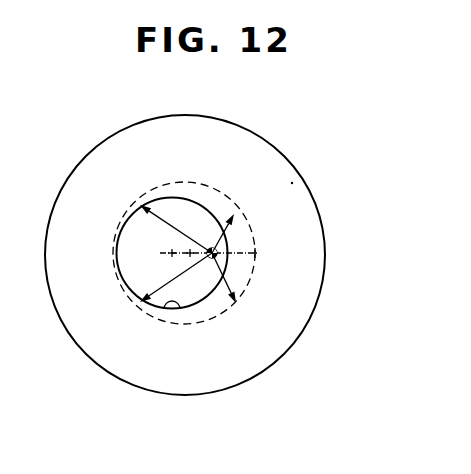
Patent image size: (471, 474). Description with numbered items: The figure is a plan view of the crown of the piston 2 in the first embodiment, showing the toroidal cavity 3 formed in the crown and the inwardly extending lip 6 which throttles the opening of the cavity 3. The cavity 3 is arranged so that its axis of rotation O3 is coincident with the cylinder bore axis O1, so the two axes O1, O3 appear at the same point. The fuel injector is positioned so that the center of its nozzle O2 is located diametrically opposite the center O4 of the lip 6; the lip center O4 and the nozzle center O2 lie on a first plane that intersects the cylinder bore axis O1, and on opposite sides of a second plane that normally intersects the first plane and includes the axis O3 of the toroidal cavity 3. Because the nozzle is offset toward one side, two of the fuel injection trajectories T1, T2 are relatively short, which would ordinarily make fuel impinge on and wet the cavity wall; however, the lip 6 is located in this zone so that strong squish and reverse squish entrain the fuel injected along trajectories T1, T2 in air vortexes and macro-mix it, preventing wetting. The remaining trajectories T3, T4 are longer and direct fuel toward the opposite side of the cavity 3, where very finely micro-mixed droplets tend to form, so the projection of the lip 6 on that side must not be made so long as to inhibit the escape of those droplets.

The piston 2 is at (203, 395).
The toroidal cavity 3 is at (200, 324).
The inwardly extending lip 6 is at (155, 306).
The cylinder bore axis O1 is at (192, 248).
The fuel injection nozzle center O2 is at (269, 254).
The toroidal cavity axis of rotation O3 is at (225, 212).
The lip center O4 is at (170, 251).
The fuel injection trajectory T1 is at (232, 227).
The fuel injection trajectory T2 is at (230, 287).
The fuel injection trajectory T3 is at (162, 215).
The fuel injection trajectory T4 is at (157, 303).